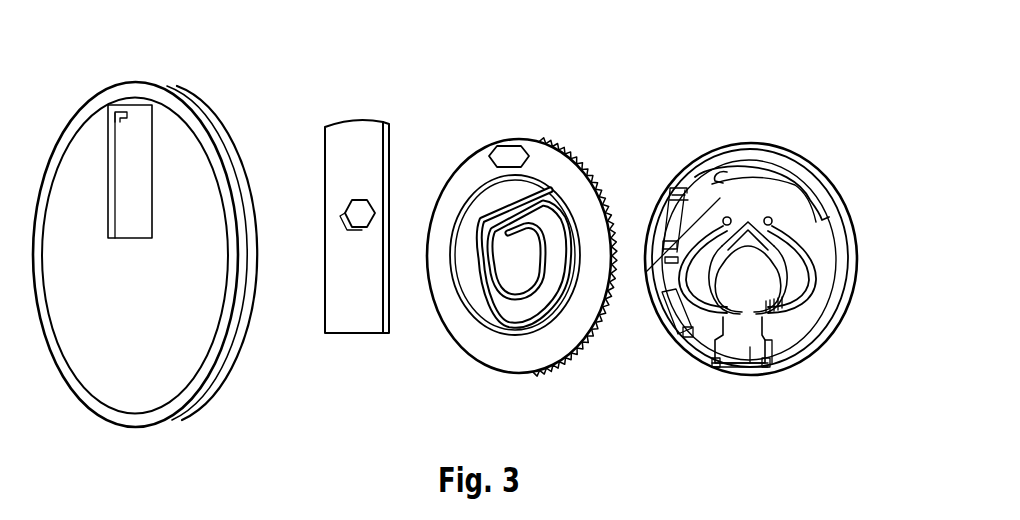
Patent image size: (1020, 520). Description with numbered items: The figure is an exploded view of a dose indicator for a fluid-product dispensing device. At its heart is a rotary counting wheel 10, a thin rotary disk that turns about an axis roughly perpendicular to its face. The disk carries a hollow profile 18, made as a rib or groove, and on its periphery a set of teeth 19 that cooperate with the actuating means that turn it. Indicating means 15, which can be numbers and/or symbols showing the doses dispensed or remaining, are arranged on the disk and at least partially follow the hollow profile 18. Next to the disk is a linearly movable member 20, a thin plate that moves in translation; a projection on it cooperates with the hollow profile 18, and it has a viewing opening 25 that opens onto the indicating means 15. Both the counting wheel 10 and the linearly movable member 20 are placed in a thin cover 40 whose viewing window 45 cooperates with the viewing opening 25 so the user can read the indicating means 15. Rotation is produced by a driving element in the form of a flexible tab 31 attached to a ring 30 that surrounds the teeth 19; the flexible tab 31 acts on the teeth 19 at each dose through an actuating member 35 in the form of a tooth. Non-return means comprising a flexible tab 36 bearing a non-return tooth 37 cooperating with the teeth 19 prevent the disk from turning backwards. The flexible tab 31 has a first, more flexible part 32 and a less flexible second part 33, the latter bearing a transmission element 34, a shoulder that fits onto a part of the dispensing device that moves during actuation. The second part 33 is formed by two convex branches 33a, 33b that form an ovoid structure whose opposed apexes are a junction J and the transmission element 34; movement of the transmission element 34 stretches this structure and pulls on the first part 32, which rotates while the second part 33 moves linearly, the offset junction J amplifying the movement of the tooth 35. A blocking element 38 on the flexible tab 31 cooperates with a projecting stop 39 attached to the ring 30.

The rotary counting wheel 10 is at (453, 186).
The indicating means 15 is at (461, 345).
The hollow profile 18 is at (523, 338).
The teeth 19 is at (605, 193).
The linearly movable member 20 is at (360, 147).
The viewing opening 25 is at (357, 215).
The ring 30 is at (708, 372).
The flexible tab 31 is at (680, 200).
The first tab part 32 is at (820, 234).
The second tab part 33 is at (750, 322).
The branch 33a is at (688, 338).
The branch 33b is at (805, 295).
The transmission element 34 is at (766, 370).
The actuating member 35 is at (672, 190).
The flexible tab 36 is at (772, 145).
The non-return tooth 37 is at (742, 152).
The blocking element 38 is at (684, 205).
The projecting stop 39 is at (668, 268).
The cover 40 is at (188, 177).
The viewing window 45 is at (132, 167).
The junction J is at (749, 216).